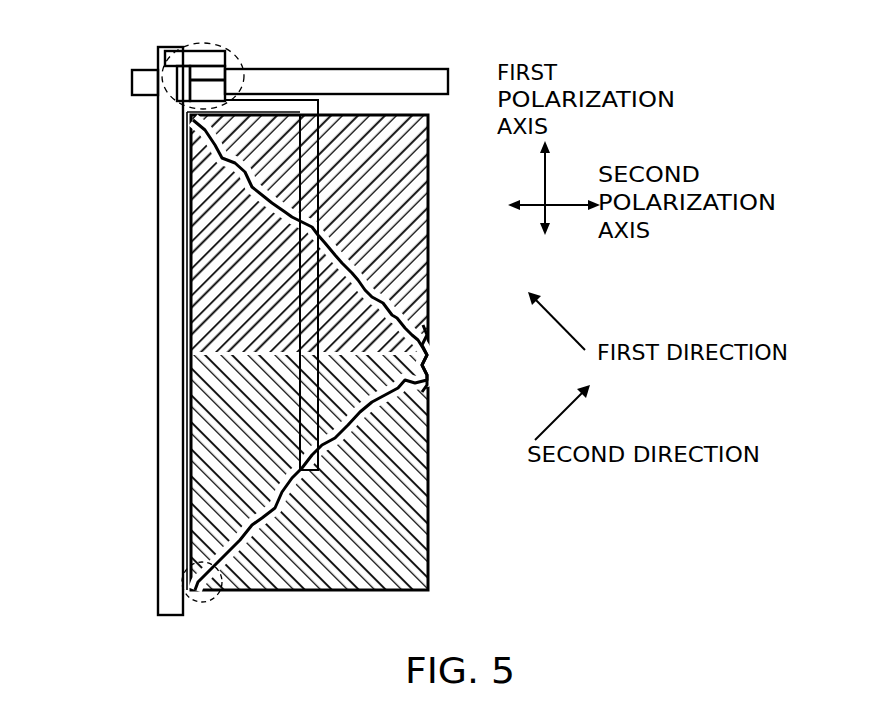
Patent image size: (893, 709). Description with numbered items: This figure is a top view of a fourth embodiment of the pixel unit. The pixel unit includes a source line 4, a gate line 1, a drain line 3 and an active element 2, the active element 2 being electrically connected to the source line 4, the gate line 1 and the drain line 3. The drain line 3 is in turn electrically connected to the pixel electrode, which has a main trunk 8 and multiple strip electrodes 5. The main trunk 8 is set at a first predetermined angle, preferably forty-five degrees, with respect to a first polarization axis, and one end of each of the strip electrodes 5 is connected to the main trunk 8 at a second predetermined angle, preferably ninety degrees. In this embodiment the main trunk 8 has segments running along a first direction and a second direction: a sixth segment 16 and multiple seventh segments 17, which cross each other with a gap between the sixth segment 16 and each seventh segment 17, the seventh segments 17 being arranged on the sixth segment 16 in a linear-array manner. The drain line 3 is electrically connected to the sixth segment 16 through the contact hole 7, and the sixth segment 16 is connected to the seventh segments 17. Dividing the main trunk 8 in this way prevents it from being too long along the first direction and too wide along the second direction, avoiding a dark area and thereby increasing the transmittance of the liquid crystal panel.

The gate line 1 is at (97, 78).
The active element 2 is at (238, 60).
The drain line 3 is at (305, 108).
The source line 4 is at (172, 355).
The strip electrodes 5 is at (210, 467).
The contact hole 7 is at (357, 334).
The main trunk 8 is at (428, 330).
The sixth segment 16 is at (245, 180).
The seventh segments 17 is at (275, 202).